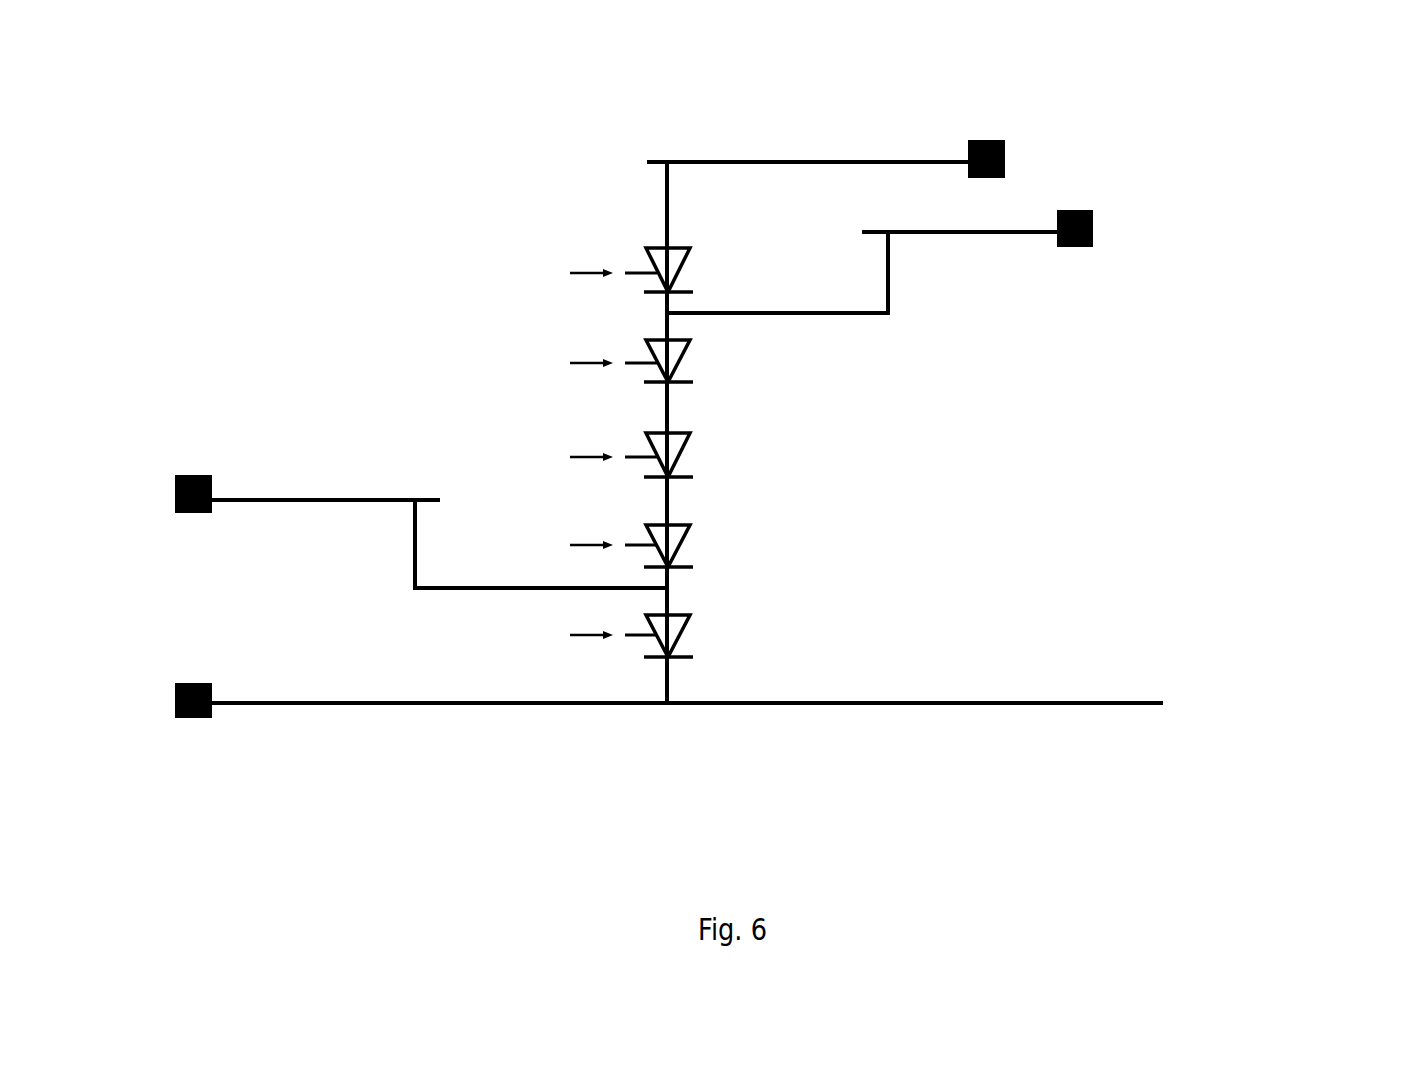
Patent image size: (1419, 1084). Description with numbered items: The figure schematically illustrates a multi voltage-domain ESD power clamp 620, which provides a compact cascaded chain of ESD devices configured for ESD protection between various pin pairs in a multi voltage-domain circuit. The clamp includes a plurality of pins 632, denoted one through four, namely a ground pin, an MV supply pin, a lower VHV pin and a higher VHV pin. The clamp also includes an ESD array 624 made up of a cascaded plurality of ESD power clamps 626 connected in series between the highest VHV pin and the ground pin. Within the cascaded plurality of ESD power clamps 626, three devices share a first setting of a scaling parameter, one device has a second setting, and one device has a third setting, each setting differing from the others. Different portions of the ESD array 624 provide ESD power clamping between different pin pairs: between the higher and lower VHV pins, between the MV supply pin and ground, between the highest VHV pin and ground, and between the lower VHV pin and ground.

The multi voltage-domain ESD power clamp 620 is at (1147, 860).
The ESD array 624 is at (637, 723).
The cascaded plurality of ESD power clamps 626 is at (612, 185).
The pins 632 is at (957, 125).